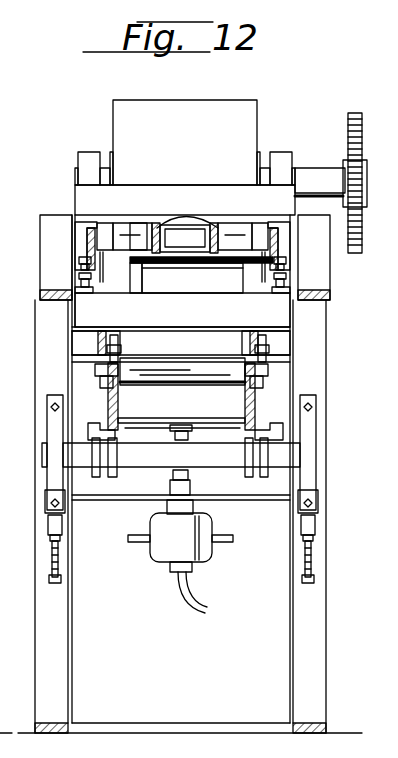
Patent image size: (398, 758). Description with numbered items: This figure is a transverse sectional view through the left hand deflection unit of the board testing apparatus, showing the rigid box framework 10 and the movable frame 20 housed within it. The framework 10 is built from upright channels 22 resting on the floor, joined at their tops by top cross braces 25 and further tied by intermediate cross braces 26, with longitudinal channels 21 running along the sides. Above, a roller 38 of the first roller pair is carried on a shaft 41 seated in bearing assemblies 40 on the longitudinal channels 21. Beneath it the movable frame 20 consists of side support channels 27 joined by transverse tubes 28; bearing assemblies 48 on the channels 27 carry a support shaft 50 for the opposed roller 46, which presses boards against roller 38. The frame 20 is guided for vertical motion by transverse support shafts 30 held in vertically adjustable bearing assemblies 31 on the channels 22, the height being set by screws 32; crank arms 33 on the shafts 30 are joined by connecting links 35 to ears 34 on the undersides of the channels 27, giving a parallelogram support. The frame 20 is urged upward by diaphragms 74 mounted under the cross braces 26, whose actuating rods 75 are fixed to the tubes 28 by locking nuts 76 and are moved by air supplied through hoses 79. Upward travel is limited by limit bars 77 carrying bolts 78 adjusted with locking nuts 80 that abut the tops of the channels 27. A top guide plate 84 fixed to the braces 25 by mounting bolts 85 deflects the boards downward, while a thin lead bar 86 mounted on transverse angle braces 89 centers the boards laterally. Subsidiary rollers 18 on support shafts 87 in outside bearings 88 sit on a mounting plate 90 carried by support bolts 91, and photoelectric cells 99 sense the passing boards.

The framework 10 is at (34, 346).
The subsidiary rollers 18 is at (222, 265).
The movable frame 20 is at (108, 412).
The longitudinal channels 21 is at (80, 228).
The upright channels 22 is at (290, 588).
The top cross braces 25 is at (78, 192).
The intermediate cross braces 26 is at (181, 469).
The side support channels 27 is at (108, 410).
The transverse tubes 28 is at (182, 382).
The transverse support shafts 30 is at (42, 460).
The bearing assemblies 31 is at (48, 434).
The screws 32 is at (55, 584).
The crank arms 33 is at (100, 455).
The ears 34 is at (110, 437).
The connecting links 35 is at (92, 436).
The roller 38 is at (118, 122).
The bearing assemblies 40 is at (82, 157).
The shaft 41 is at (318, 172).
The roller 46 is at (162, 390).
The bearing assemblies 48 is at (74, 350).
The support shaft 50 is at (98, 340).
The diaphragms 74 is at (156, 562).
The actuating rods 75 is at (190, 476).
The locking nuts 76 is at (172, 430).
The limit bars 77 is at (82, 366).
The bolts 78 is at (118, 345).
The hoses 79 is at (178, 588).
The locking nuts 80 is at (122, 357).
The top guide plate 84 is at (208, 239).
The mounting bolts 85 is at (205, 219).
The lead bar 86 is at (145, 275).
The support shafts 87 is at (182, 268).
The outside bearings 88 is at (80, 258).
The transverse angle braces 89 is at (182, 310).
The mounting plate 90 is at (92, 294).
The support bolts 91 is at (80, 280).
The photoelectric cells 99 is at (15, 263).